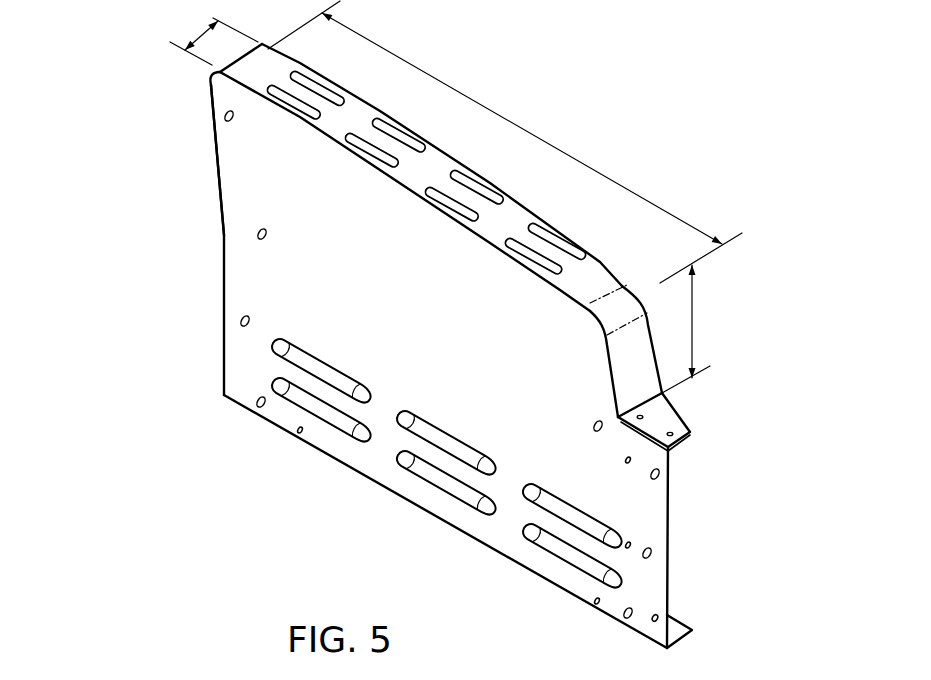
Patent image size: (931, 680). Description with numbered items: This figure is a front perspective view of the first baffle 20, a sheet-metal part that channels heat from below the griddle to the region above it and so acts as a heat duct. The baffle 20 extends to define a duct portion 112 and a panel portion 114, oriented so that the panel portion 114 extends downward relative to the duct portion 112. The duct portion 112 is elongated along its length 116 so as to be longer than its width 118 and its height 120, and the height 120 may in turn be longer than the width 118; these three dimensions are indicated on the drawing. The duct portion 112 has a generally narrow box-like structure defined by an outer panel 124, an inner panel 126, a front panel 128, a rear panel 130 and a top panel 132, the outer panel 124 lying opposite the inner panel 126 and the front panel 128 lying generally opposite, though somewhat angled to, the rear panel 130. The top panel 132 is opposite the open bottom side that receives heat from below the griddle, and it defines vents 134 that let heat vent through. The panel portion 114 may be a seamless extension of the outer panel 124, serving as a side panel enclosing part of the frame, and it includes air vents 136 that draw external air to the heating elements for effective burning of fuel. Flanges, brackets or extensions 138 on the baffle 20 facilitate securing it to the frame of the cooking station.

The first baffle 20 is at (774, 224).
The duct portion 112 is at (265, 197).
The panel portion 114 is at (500, 530).
The length 116 is at (597, 173).
The width 118 is at (185, 42).
The height 120 is at (694, 325).
The outer panel 124 is at (247, 143).
The inner panel 126 is at (438, 149).
The front panel 128 is at (637, 377).
The rear panel 130 is at (210, 108).
The top panel 132 is at (515, 218).
The vents 134 is at (345, 96).
The air vents 136 is at (310, 412).
The flanges, brackets or extensions 138 is at (662, 428).